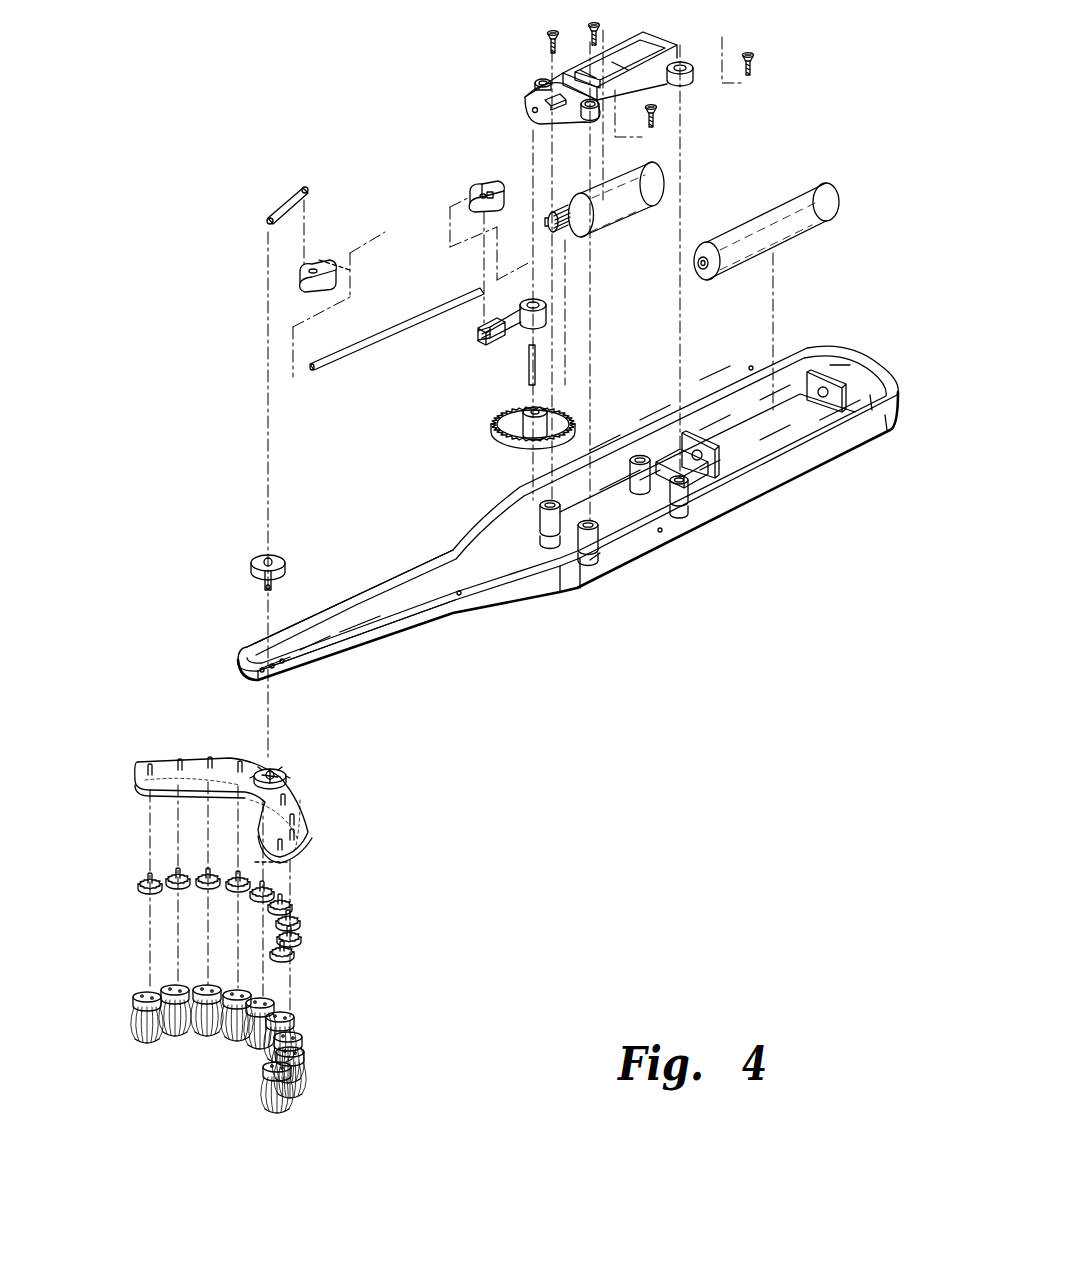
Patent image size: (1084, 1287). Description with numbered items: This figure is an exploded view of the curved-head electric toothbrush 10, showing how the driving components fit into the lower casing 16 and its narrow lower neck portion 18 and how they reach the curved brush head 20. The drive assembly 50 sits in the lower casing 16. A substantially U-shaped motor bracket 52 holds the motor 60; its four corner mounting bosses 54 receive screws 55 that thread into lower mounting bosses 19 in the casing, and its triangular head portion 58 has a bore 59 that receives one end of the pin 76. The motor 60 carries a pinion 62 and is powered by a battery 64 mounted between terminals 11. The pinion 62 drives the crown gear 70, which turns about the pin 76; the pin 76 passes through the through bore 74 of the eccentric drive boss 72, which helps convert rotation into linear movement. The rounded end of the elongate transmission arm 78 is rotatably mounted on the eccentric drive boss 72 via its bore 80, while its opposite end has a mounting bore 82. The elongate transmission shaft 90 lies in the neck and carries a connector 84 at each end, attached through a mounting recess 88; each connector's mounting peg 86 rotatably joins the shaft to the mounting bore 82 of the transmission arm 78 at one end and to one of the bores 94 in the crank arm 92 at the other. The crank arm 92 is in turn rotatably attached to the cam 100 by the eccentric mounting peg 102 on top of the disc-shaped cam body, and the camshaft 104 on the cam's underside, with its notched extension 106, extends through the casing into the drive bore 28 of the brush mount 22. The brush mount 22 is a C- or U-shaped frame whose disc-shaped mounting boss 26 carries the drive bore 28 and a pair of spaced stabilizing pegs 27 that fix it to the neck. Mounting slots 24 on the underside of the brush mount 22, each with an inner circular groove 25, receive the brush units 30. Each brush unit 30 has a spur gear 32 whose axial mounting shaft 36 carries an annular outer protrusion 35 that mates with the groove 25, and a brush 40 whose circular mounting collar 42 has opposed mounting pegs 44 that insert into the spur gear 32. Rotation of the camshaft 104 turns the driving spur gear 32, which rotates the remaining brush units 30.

The curved-head electric toothbrush 10 is at (316, 98).
The terminals 11 is at (822, 371).
The lower casing 16 is at (795, 476).
The lower neck portion 18 is at (436, 607).
The lower mounting bosses 19 is at (560, 545).
The curved brush head 20 is at (183, 705).
The brush mount 22 is at (308, 830).
The mounting slots 24 is at (292, 858).
The circular groove 25 is at (305, 805).
The mounting boss 26 is at (292, 780).
The stabilizing pegs 27 is at (258, 770).
The drive bore 28 is at (272, 768).
The brush units 30 is at (276, 895).
The spur gear 32 is at (302, 936).
The annular outer protrusion 35 is at (142, 885).
The mounting shaft 36 is at (150, 875).
The brush 40 is at (283, 1049).
The mounting collar 42 is at (262, 1060).
The mounting pegs 44 is at (305, 1054).
The drive assembly 50 is at (212, 358).
The motor bracket 52 is at (668, 38).
The mounting bosses 54 is at (535, 80).
The screws 55 is at (584, 34).
The triangular head portion 58 is at (535, 100).
The bore 59 is at (530, 115).
The motor 60 is at (622, 215).
The pinion 62 is at (565, 235).
The battery 64 is at (828, 188).
The crown gear 70 is at (517, 400).
The eccentric drive boss 72 is at (565, 412).
The through bore 74 is at (545, 405).
The pin 76 is at (527, 382).
The transmission arm 78 is at (528, 298).
The bore 80 is at (555, 308).
The mounting bore 82 is at (478, 338).
The connector 84 is at (298, 280).
The mounting peg 86 is at (315, 265).
The mounting recess 88 is at (340, 258).
The transmission shaft 90 is at (380, 330).
The crank arm 92 is at (268, 205).
The bores 94 is at (305, 188).
The cam 100 is at (262, 562).
The eccentric mounting peg 102 is at (270, 560).
The camshaft 104 is at (278, 582).
The notched extension 106 is at (260, 588).